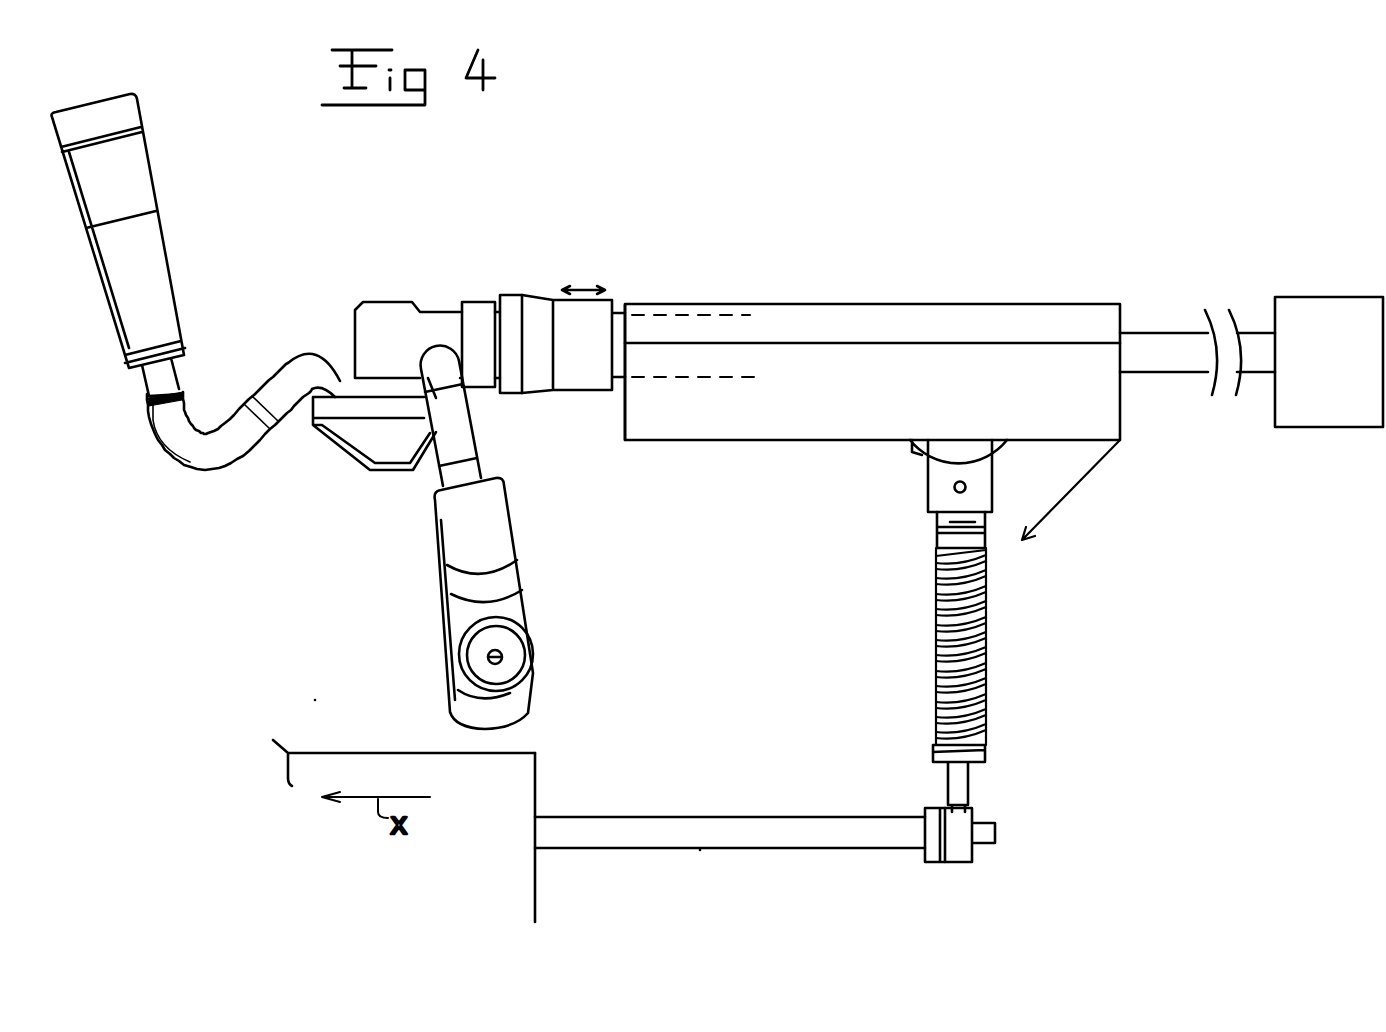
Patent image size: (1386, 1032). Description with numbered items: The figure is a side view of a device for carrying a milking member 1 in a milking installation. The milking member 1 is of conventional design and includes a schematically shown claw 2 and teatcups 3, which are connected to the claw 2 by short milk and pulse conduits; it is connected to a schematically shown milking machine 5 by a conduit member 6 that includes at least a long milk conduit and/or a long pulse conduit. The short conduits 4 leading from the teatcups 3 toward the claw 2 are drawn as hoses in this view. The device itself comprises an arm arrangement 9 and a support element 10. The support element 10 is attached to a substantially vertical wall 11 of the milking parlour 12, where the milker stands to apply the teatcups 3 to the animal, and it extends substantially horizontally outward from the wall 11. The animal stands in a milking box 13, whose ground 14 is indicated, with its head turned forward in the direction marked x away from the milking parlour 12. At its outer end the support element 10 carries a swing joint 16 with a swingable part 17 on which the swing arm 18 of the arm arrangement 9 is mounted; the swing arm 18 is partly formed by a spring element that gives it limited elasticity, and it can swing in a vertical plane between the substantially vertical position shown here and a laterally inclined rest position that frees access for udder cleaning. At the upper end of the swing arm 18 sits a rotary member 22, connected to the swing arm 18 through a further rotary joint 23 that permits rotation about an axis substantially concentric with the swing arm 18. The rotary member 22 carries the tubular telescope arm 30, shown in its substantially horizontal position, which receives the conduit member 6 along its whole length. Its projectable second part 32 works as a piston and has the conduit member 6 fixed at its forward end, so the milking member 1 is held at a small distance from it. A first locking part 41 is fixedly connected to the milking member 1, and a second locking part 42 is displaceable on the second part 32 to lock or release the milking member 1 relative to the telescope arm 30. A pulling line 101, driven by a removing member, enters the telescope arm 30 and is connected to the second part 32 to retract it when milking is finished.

The milking member 1 is at (309, 226).
The claw 2 is at (343, 453).
The teatcups 3 is at (147, 267).
The hose 4 is at (273, 380).
The milking machine 5 is at (1328, 307).
The conduit member 6 is at (1170, 343).
The arm arrangement 9 is at (849, 189).
The support element 10 is at (647, 830).
The substantially vertical wall 11 is at (540, 768).
The milking parlour 12 is at (709, 898).
The milking box 13 is at (333, 653).
The ground 14 is at (332, 753).
The swing joint 16 is at (927, 865).
The swingable part 17 is at (967, 867).
The swing arm 18 is at (988, 661).
The rotary member 22 is at (993, 453).
The further rotary joint 23 is at (947, 538).
The telescope arm 30 is at (913, 310).
The second part 32 is at (626, 340).
The first locking part 41 is at (473, 310).
The second locking part 42 is at (537, 305).
The pulling line 101 is at (1062, 500).